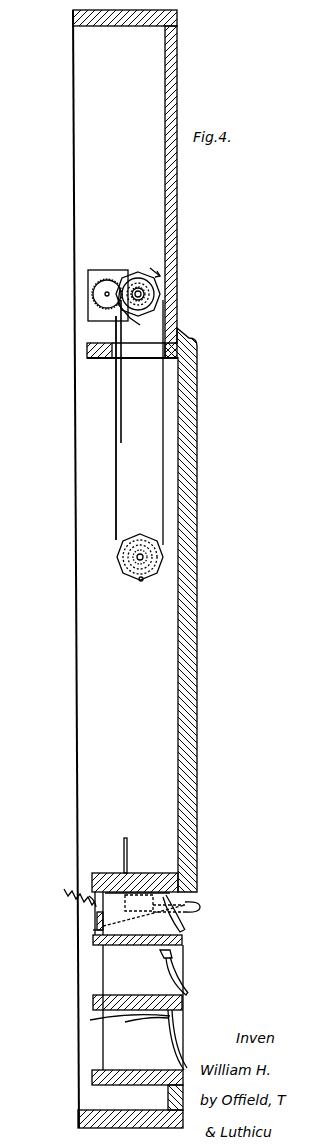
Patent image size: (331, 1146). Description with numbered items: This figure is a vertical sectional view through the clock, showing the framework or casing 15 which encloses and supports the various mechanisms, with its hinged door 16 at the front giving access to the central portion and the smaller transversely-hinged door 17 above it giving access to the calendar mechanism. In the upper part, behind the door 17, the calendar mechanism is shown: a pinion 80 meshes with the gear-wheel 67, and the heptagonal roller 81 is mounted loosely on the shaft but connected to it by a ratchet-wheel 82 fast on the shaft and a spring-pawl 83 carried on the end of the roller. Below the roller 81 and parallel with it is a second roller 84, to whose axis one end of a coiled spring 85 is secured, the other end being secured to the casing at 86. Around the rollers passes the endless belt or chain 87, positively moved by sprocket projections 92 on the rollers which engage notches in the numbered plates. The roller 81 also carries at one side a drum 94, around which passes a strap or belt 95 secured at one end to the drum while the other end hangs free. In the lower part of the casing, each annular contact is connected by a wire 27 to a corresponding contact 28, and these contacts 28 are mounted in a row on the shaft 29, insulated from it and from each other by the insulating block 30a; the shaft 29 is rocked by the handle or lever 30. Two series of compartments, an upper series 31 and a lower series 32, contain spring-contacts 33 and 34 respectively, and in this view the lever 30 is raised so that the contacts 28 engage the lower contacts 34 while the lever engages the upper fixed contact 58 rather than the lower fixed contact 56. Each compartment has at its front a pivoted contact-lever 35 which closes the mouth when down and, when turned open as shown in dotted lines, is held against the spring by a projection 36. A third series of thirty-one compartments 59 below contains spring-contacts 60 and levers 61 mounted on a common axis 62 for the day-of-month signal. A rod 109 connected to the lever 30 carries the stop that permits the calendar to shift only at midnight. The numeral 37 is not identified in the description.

The framework or casing 15 is at (74, 627).
The hinged door 16 is at (197, 612).
The transversely-hinged door 17 is at (178, 262).
The wire 27 is at (64, 892).
The contact 28 is at (93, 931).
The shaft or axis 29 is at (93, 920).
The handle or lever 30 is at (140, 913).
The insulating block or plate 30a is at (97, 940).
The upper series of compartments 31 is at (187, 921).
The lower series of compartments 32 is at (178, 976).
The spring-contact 33 is at (197, 863).
The spring-contact 34 is at (104, 947).
The pivoted contact-lever 35 is at (204, 992).
The projection 36 is at (182, 903).
The lug 37 is at (143, 960).
The fixed contact 56 is at (130, 947).
The fixed contact 58 is at (158, 880).
The third series of compartments 59 is at (130, 1061).
The spring-contact 60 is at (140, 1015).
The lever 61 is at (186, 1046).
The common axis 62 is at (165, 1019).
The gear-wheel 67 is at (104, 279).
The pinion 80 is at (139, 272).
The roller 81 is at (165, 300).
The ratchet-wheel 82 is at (140, 312).
The spring-pawl 83 is at (178, 284).
The second roller 84 is at (140, 534).
The coiled spring 85 is at (160, 556).
The casing attachment point 86 is at (142, 582).
The endless belt or chain 87 is at (115, 445).
The sprocket projections 92 is at (179, 314).
The drum 94 is at (113, 318).
The strap or belt 95 is at (122, 388).
The rod 109 is at (128, 842).